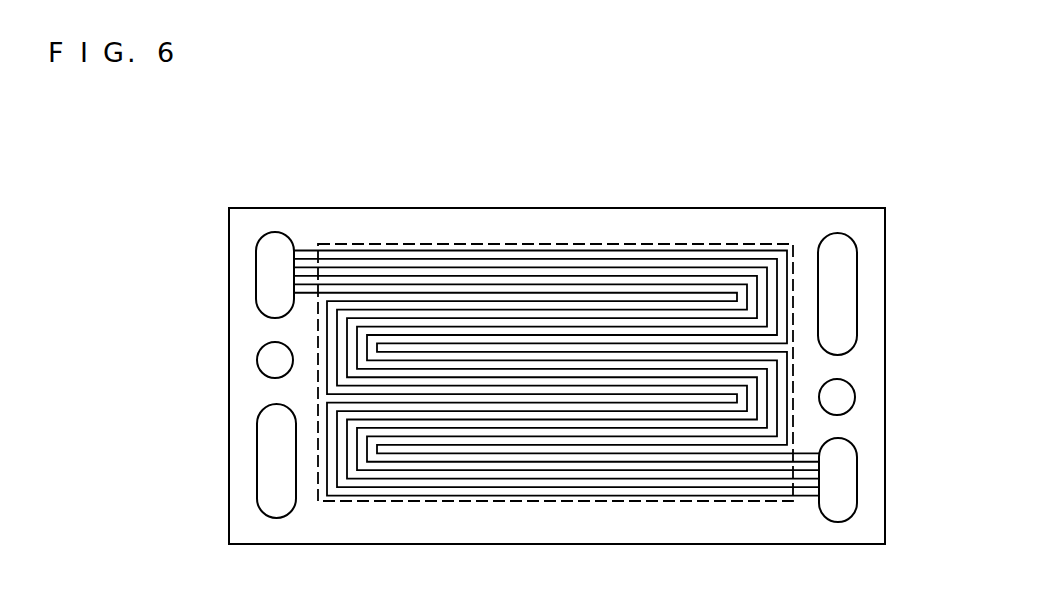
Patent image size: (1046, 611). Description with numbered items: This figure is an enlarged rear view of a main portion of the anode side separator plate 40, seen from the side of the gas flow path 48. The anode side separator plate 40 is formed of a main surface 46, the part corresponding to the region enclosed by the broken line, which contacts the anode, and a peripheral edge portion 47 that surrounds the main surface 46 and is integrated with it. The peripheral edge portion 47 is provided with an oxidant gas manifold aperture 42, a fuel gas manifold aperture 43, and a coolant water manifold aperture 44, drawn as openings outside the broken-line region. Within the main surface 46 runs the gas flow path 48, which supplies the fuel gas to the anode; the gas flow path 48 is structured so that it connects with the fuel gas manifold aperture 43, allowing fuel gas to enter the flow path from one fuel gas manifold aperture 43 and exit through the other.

The anode side separator plate 40 is at (590, 207).
The oxidant gas manifold aperture 42 is at (837, 292).
The fuel gas manifold aperture 43 is at (270, 279).
The coolant water manifold aperture 44 is at (270, 367).
The main surface 46 is at (524, 244).
The peripheral edge portion 47 is at (817, 227).
The gas flow path 48 is at (389, 254).